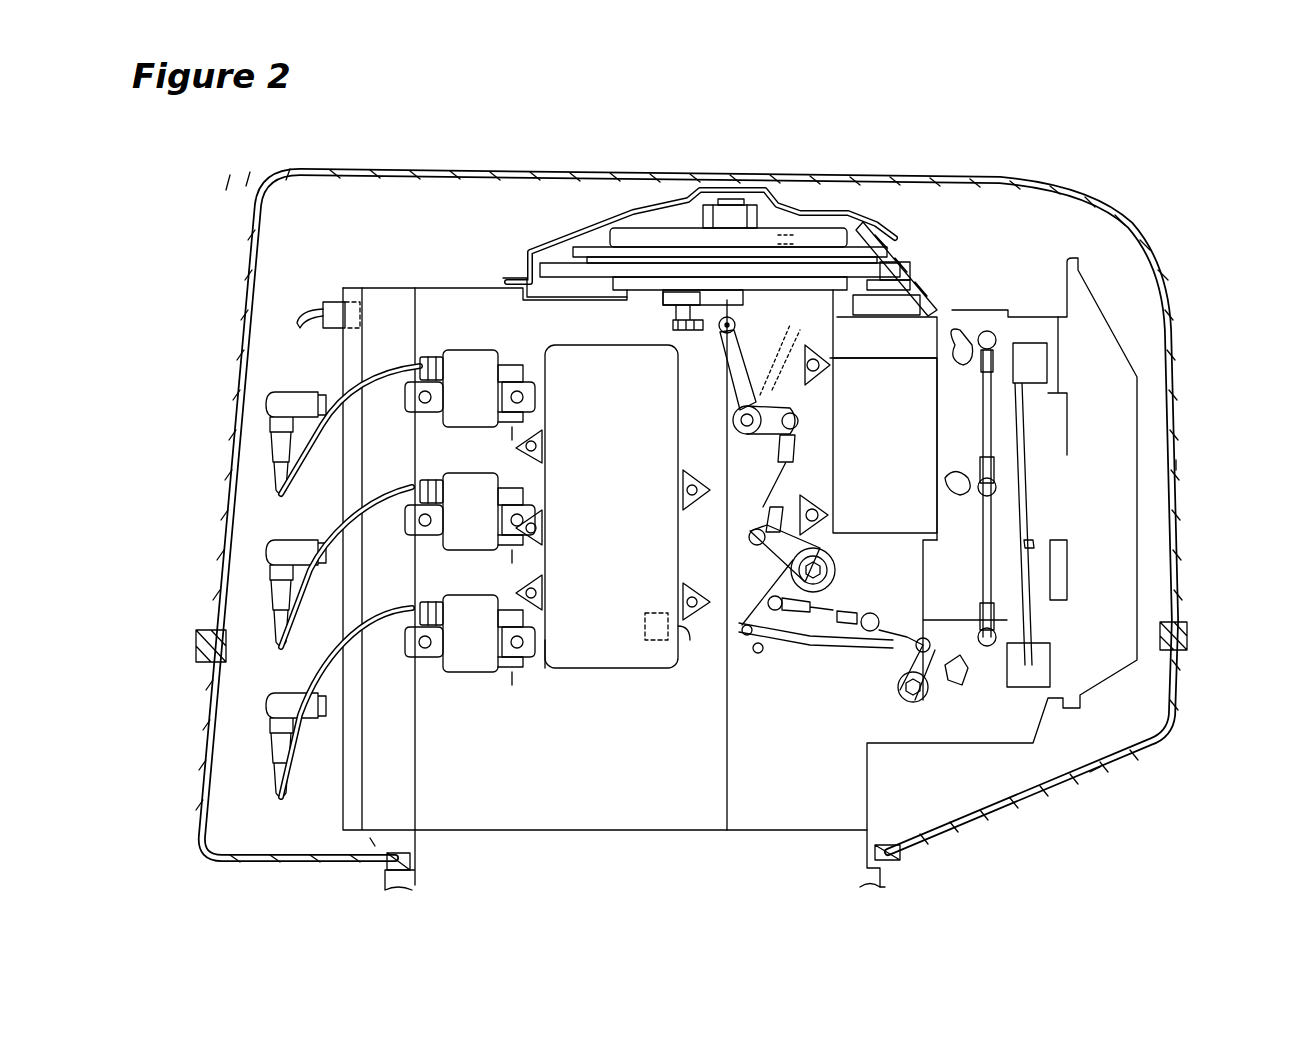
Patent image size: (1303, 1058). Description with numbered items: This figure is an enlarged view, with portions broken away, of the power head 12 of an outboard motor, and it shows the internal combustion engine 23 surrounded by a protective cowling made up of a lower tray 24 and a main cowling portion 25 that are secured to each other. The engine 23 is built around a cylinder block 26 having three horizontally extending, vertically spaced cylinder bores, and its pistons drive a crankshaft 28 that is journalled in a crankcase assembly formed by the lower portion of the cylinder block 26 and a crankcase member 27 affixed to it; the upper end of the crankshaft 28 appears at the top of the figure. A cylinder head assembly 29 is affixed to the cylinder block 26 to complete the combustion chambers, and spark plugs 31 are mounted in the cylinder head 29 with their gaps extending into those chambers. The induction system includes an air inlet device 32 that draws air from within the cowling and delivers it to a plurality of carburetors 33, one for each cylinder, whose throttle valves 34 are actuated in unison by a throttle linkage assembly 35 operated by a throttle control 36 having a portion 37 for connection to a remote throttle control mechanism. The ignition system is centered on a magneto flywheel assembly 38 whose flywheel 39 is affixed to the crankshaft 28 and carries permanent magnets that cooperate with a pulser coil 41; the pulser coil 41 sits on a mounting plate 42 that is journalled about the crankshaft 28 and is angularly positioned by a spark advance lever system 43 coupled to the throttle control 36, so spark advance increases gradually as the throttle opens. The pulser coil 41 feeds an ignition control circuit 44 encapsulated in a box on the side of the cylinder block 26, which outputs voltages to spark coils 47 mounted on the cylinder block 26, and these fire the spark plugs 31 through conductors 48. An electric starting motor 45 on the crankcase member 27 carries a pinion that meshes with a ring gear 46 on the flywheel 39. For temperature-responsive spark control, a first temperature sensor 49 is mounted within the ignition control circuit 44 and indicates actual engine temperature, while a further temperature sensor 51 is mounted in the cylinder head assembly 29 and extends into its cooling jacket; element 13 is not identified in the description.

The power head 12 is at (1058, 186).
The lower unit 13 is at (902, 884).
The internal combustion engine 23 is at (465, 275).
The lower tray 24 is at (1100, 767).
The main cowling portion 25 is at (1176, 462).
The cylinder block 26 is at (607, 815).
The crankcase member 27 is at (807, 827).
The crankshaft 28 is at (738, 208).
The cylinder head assembly 29 is at (367, 840).
The spark plugs 31 is at (284, 700).
The air inlet device 32 is at (1100, 325).
The carburetors 33 is at (1033, 610).
The throttle valves 34 is at (957, 487).
The throttle linkage assembly 35 is at (979, 549).
The throttle control 36 is at (793, 647).
The portion 37 is at (893, 673).
The magneto flywheel assembly 38 is at (780, 233).
The flywheel 39 is at (578, 238).
The pulser coil 41 is at (790, 240).
The mounting plate 42 is at (657, 297).
The spark advance lever system 43 is at (759, 442).
The ignition control circuit 44 is at (557, 652).
The electric starting motor 45 is at (940, 320).
The ring gear 46 is at (915, 242).
The spark coils 47 is at (453, 672).
The conductors 48 is at (326, 688).
The temperature sensor 49 is at (657, 662).
The temperature sensor 51 is at (336, 300).